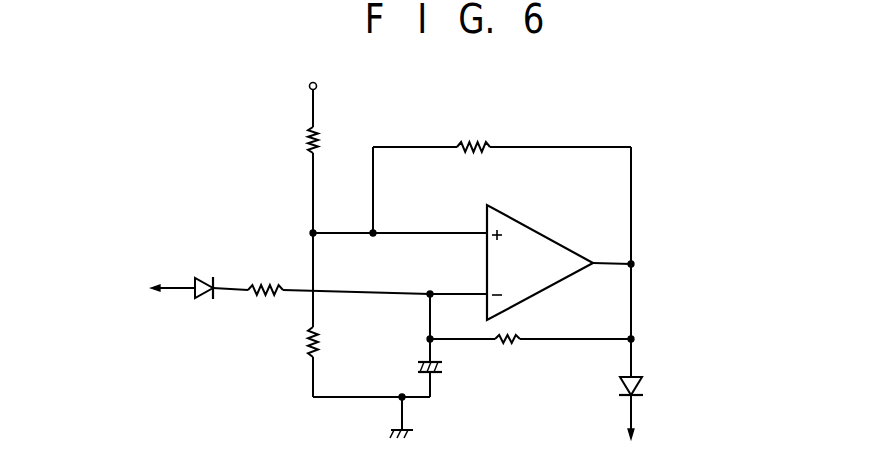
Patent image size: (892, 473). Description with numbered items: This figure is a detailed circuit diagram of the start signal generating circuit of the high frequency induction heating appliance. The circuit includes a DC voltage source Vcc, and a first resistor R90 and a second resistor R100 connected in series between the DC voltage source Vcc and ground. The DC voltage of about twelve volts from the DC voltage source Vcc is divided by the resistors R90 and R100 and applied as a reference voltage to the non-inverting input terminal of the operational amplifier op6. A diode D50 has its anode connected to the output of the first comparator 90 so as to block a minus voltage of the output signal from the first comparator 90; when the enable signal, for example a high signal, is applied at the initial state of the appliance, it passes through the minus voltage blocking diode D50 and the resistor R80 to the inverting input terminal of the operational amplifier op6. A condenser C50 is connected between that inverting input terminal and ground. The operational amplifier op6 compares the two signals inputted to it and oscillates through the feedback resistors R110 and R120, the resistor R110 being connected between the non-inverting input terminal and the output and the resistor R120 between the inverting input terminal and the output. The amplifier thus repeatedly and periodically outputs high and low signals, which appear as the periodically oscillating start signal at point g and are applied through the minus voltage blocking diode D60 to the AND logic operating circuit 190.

The first comparator 90 is at (167, 309).
The AND logic operating circuit 190 is at (663, 426).
The diode D50 is at (190, 264).
The resistor R80 is at (266, 274).
The first resistor R90 is at (287, 141).
The second resistor R100 is at (286, 342).
The fourth resistor R110 is at (474, 130).
The fifth resistor R120 is at (509, 360).
The condenser C50 is at (408, 365).
The operational amplifier op6 is at (559, 262).
The diode D60 is at (653, 388).
The point g is at (631, 339).
The DC voltage source Vcc is at (340, 100).